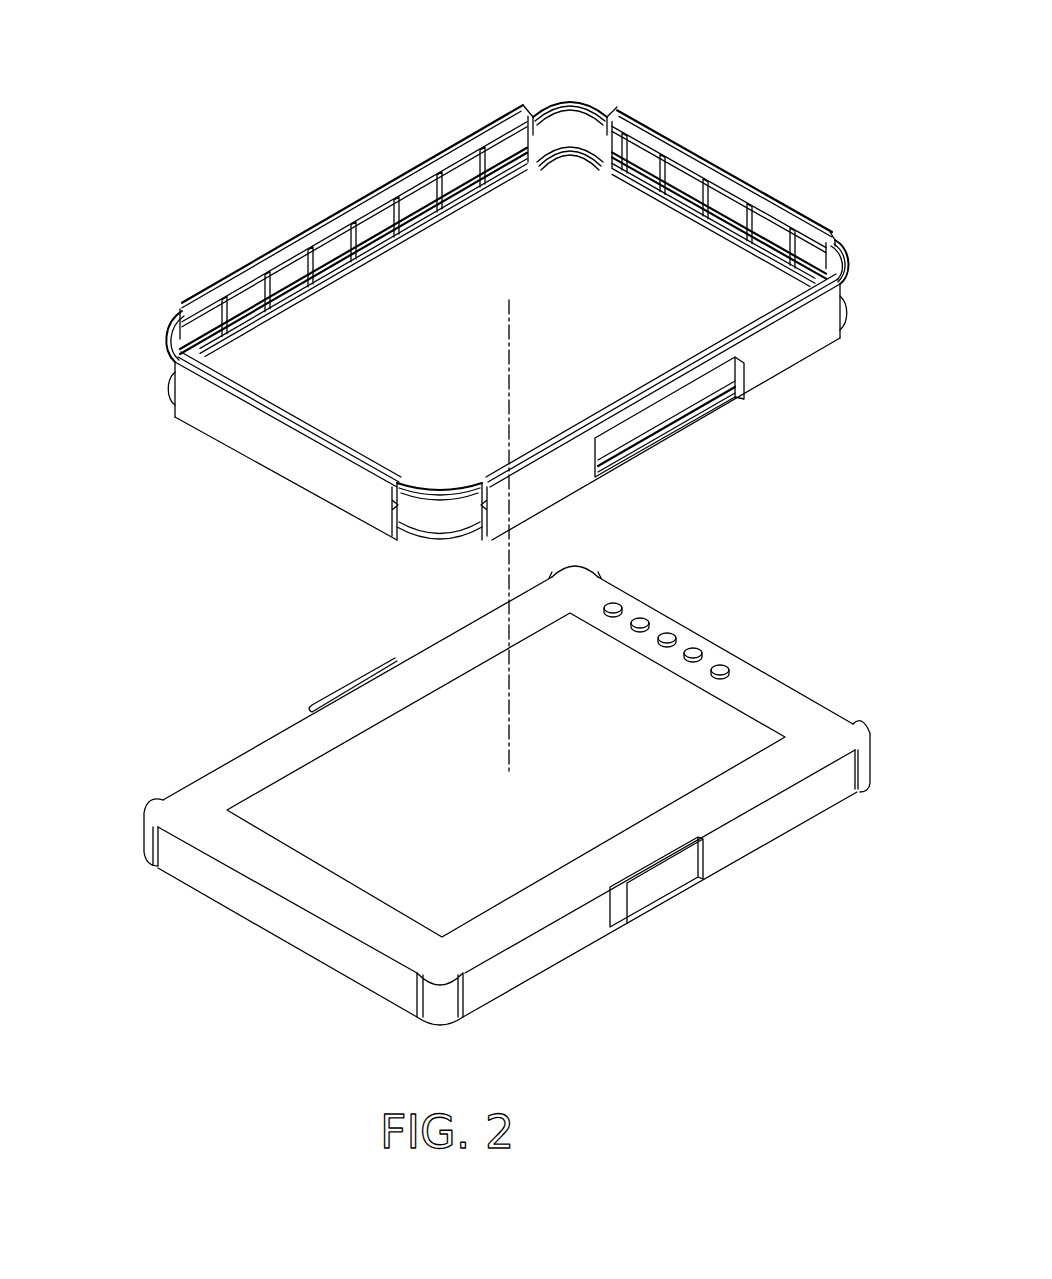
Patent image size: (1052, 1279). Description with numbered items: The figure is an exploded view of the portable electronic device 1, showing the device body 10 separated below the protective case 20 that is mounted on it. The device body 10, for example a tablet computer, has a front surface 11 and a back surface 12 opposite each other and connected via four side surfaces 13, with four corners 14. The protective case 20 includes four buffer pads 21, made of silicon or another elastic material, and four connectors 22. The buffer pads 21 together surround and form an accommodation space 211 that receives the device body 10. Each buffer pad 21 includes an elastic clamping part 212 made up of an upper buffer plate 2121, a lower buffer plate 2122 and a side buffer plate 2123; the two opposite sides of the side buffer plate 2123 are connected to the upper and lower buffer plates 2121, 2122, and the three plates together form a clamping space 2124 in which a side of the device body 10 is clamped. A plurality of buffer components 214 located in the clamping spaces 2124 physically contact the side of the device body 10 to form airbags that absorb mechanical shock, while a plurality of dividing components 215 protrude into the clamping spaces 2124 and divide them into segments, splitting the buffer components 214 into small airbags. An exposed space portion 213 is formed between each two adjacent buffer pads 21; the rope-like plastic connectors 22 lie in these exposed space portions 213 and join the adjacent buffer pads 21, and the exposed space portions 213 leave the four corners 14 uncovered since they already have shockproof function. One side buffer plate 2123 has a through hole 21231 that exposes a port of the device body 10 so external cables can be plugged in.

The portable electronic device 1 is at (41, 38).
The device body 10 is at (808, 715).
The front surface 11 is at (297, 742).
The back surface 12 is at (748, 852).
The side surfaces 13 is at (234, 749).
The corners 14 is at (866, 728).
The protective case 20 is at (382, 373).
The buffer pads 21 is at (156, 180).
The connectors 22 is at (175, 332).
The accommodation space 211 is at (588, 192).
The elastic clamping part 212 is at (305, 212).
The upper buffer plate 2121 is at (335, 452).
The lower buffer plate 2122 is at (395, 538).
The side buffer plate 2123 is at (345, 495).
The through hole 21231 is at (702, 394).
The clamping space 2124 is at (325, 260).
The exposed space portion 213 is at (845, 285).
The buffer components 214 is at (455, 183).
The dividing components 215 is at (478, 162).